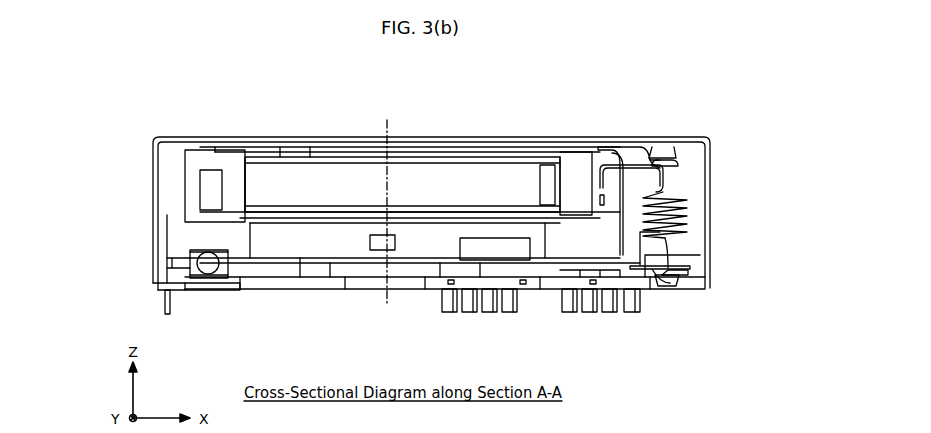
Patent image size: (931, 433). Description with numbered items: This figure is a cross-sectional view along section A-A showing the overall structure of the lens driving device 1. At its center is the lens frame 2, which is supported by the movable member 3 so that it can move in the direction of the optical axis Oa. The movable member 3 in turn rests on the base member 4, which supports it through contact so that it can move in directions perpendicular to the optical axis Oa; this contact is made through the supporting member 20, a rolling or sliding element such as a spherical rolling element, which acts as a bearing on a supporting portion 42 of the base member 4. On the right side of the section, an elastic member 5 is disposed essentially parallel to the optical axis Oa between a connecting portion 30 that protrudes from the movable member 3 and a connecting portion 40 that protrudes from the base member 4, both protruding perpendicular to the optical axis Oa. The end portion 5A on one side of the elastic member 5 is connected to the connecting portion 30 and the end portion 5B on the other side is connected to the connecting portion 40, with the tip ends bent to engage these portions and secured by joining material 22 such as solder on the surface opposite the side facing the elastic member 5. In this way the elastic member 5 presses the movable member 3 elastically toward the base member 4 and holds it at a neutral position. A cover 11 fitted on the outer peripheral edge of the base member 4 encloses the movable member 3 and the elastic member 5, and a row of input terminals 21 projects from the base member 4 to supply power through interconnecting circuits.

The lens driving device 1 is at (735, 93).
The lens frame 2 is at (510, 178).
The movable member 3 is at (606, 148).
The base member 4 is at (403, 290).
The elastic member 5 is at (678, 230).
The end portion 5A is at (657, 150).
The end portion 5B is at (660, 285).
The cover 11 is at (708, 200).
The supporting member 20 is at (190, 256).
The input terminals 21 is at (524, 318).
The joining material 22 is at (674, 150).
The connecting portion 30 is at (663, 165).
The connecting portion 40 is at (690, 268).
The supporting portion 42 is at (178, 272).
The optical axis Oa is at (378, 118).